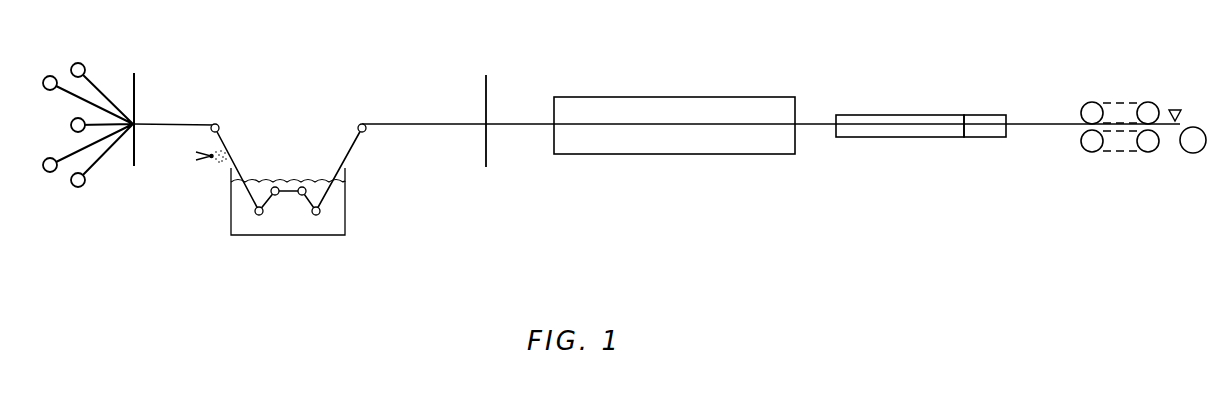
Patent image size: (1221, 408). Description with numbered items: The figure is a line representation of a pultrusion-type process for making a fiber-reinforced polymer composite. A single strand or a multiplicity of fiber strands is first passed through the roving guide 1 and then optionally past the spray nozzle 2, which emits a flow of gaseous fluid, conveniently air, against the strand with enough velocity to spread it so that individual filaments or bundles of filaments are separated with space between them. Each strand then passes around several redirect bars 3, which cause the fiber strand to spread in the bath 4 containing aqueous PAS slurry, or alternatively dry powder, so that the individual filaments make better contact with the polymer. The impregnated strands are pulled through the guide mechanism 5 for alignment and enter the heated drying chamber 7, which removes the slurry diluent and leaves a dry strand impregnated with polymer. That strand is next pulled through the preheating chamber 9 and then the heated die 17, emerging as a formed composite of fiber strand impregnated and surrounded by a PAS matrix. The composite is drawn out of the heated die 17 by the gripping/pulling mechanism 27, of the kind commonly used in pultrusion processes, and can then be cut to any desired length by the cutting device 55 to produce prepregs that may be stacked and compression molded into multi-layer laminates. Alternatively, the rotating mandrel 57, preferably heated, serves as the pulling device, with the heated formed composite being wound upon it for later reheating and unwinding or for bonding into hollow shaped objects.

The roving guide 1 is at (134, 73).
The spray nozzle 2 is at (208, 158).
The redirect bars 3 is at (316, 215).
The bath 4 is at (260, 236).
The guide mechanism 5 is at (486, 75).
The heated drying chamber 7 is at (655, 154).
The preheating chamber 9 is at (917, 137).
The heated die 17 is at (1003, 137).
The gripping/pulling mechanism 27 is at (1156, 151).
The cutting device 55 is at (1175, 109).
The rotating mandrel 57 is at (1188, 153).